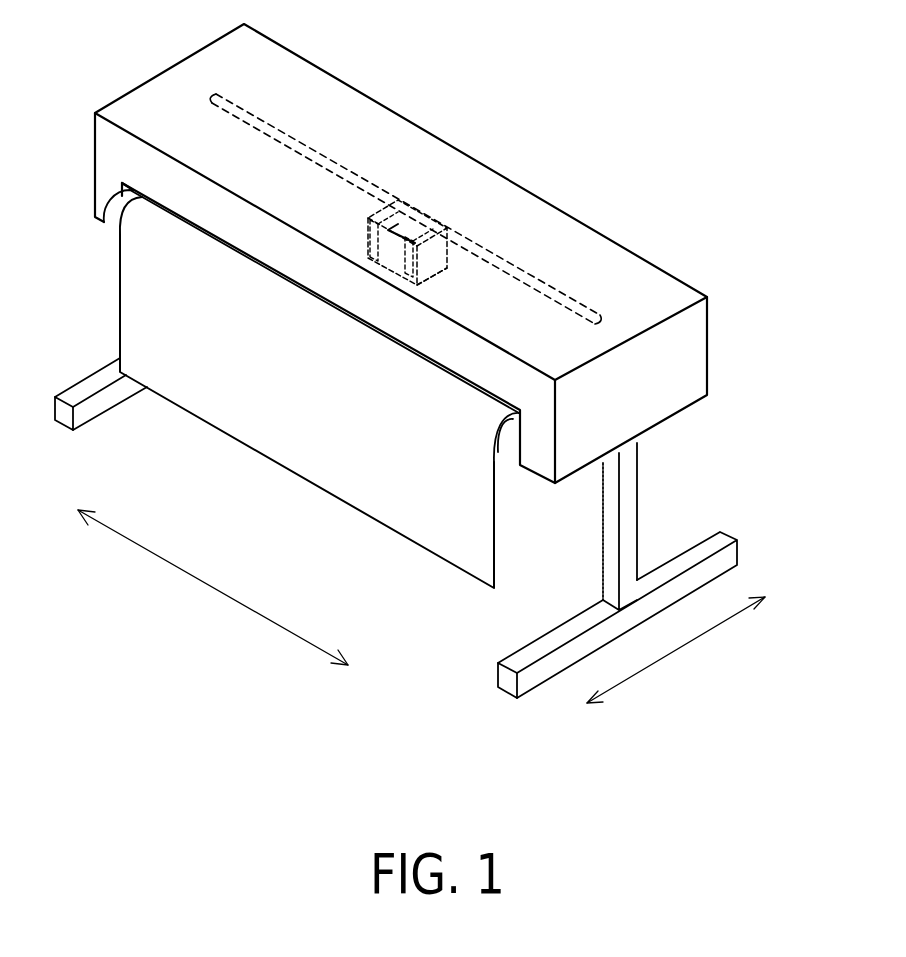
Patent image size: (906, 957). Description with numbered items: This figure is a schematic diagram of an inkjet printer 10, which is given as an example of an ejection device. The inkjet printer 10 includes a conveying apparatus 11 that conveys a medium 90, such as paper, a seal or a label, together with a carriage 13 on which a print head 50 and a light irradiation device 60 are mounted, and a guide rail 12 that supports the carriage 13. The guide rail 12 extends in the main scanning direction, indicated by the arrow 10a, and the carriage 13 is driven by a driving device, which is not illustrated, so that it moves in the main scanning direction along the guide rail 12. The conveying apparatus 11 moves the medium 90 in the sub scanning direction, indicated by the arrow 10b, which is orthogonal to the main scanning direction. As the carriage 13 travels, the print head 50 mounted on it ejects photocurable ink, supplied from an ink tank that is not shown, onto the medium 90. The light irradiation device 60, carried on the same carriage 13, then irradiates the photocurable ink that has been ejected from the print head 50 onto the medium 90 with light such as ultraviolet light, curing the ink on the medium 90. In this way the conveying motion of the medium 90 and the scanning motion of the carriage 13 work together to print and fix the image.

The inkjet printer 10 is at (627, 147).
The main scanning direction 10a is at (213, 599).
The sub scanning direction 10b is at (682, 648).
The conveying apparatus 11 is at (510, 442).
The guide rail 12 is at (333, 150).
The carriage 13 is at (440, 273).
The print head 50 is at (418, 213).
The light irradiation device 60 is at (403, 207).
The medium 90 is at (303, 433).